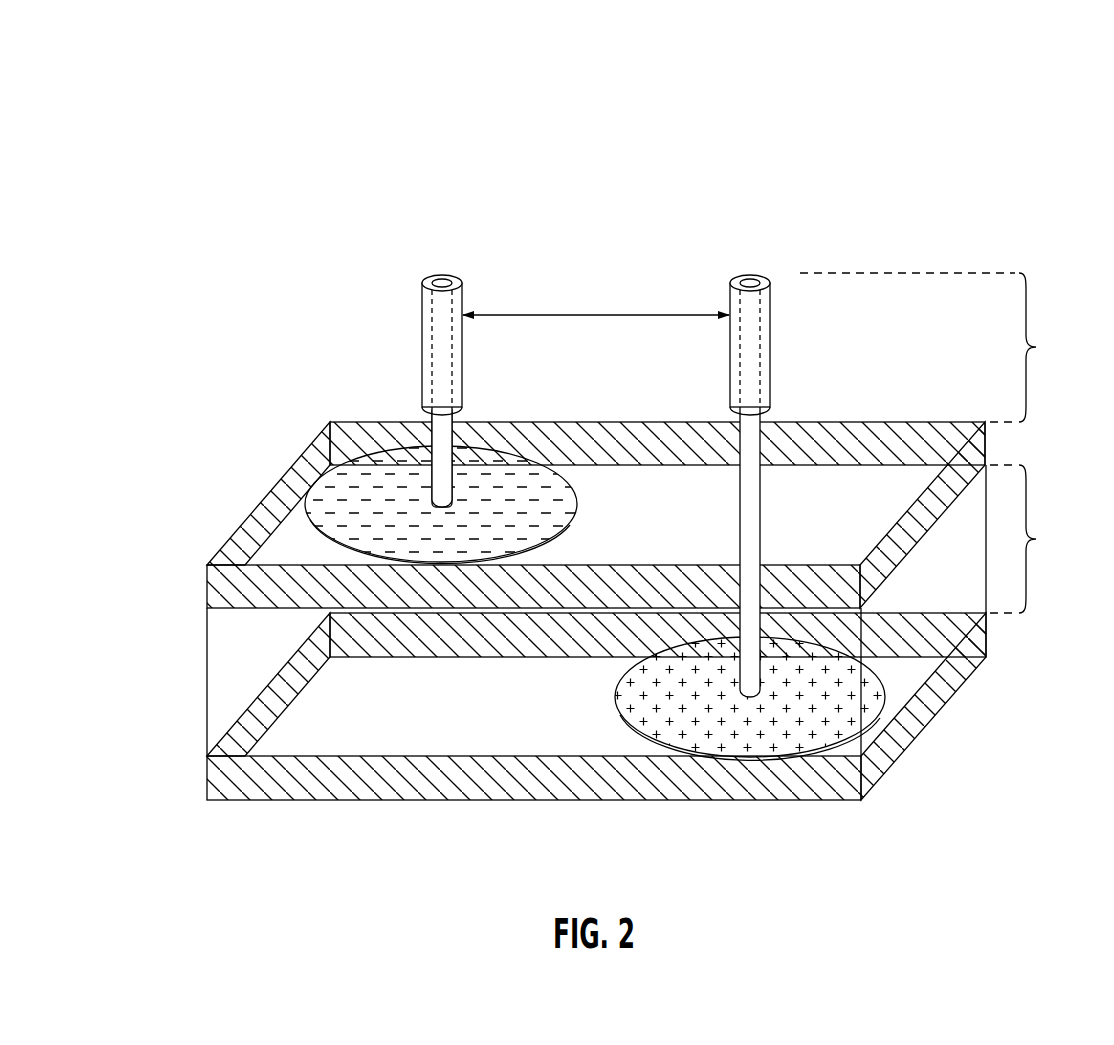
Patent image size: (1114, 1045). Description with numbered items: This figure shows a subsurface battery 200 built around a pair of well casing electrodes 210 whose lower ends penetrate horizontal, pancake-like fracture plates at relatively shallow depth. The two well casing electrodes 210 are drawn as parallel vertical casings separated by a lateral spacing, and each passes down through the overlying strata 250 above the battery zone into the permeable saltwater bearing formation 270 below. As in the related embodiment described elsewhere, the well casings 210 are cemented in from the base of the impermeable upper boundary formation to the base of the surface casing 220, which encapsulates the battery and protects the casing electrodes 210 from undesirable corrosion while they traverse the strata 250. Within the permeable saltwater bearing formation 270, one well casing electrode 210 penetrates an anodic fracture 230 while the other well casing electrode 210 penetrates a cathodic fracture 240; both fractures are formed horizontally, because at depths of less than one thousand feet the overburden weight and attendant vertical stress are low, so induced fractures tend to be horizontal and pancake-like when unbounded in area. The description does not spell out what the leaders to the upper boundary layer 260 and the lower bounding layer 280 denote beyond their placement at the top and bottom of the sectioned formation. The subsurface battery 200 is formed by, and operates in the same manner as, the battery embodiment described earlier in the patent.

The subsurface battery 200 is at (226, 64).
The well casing electrode 210 is at (442, 274).
The surface casing 220 is at (541, 314).
The anodic fracture 230 is at (487, 518).
The cathodic fracture 240 is at (797, 723).
The strata above the battery zone 250 is at (942, 347).
The upper housing 260 is at (986, 446).
The permeable saltwater bearing formation 270 is at (1037, 539).
The lower housing 280 is at (988, 637).